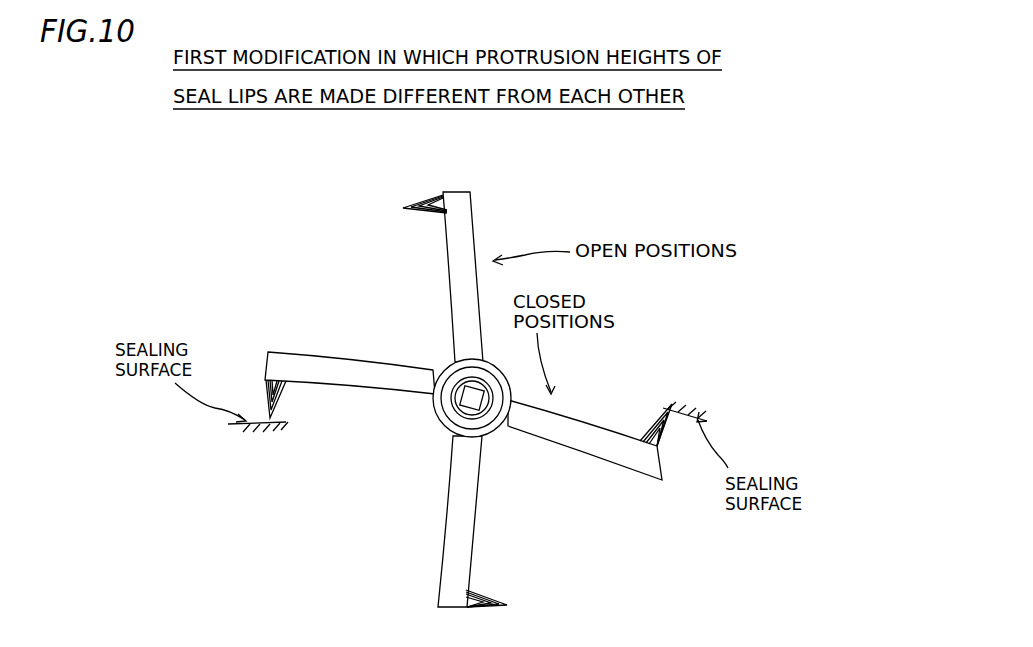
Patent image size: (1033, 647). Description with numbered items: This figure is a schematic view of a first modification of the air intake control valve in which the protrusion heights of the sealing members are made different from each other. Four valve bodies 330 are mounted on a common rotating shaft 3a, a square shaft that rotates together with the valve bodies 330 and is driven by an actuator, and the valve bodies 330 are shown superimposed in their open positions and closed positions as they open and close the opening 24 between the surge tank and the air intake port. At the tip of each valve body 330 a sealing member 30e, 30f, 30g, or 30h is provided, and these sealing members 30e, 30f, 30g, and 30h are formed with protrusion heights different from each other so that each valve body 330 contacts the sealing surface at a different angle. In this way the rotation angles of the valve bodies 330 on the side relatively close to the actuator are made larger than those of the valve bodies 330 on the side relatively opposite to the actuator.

The valve body 330 is at (476, 218).
The opening 24 is at (614, 376).
The rotating shaft 3a is at (465, 410).
The sealing member 30e is at (403, 208).
The sealing member 30f is at (412, 205).
The sealing member 30g is at (427, 202).
The sealing member 30h is at (438, 200).